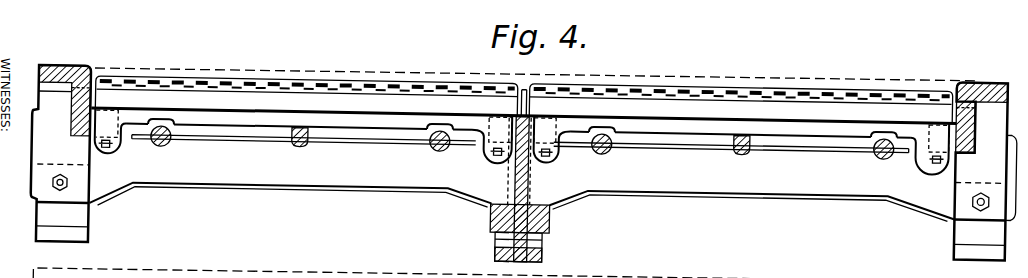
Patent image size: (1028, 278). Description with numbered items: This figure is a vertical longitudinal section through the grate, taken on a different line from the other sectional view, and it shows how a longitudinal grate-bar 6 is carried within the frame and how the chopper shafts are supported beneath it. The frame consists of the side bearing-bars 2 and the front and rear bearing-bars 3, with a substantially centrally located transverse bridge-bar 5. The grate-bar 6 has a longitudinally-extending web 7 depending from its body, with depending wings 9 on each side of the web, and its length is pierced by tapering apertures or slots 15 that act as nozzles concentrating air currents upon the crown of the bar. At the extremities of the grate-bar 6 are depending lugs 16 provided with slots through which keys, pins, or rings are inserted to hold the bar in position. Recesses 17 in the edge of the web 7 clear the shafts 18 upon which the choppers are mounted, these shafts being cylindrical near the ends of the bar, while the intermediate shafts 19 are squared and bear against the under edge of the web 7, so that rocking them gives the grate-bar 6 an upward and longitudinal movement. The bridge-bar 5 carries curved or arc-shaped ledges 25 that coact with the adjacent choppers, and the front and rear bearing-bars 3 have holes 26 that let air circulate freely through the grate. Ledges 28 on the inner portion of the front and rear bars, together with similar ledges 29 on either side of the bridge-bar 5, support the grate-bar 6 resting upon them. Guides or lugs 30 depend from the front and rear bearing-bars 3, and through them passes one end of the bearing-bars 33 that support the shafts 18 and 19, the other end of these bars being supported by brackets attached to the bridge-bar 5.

The side bearing-bars 2 is at (888, 68).
The front and rear bearing-bars 3 is at (65, 66).
The transverse bridge-bar 5 is at (531, 165).
The longitudinal grate-bar 6 is at (320, 80).
The longitudinally-extending web 7 is at (518, 125).
The depending wings 9 is at (523, 100).
The apertures or slots 15 is at (205, 79).
The lugs 16 is at (113, 152).
The recesses 17 is at (162, 118).
The shafts 18 is at (162, 145).
The intermediate shafts 19 is at (300, 143).
The curved or arc-shaped ledges 25 is at (517, 105).
The holes 26 is at (73, 99).
The ledges 28 is at (95, 142).
The ledges 29 is at (505, 160).
The guides or lugs 30 is at (45, 184).
The bearing-bars 33 is at (523, 178).